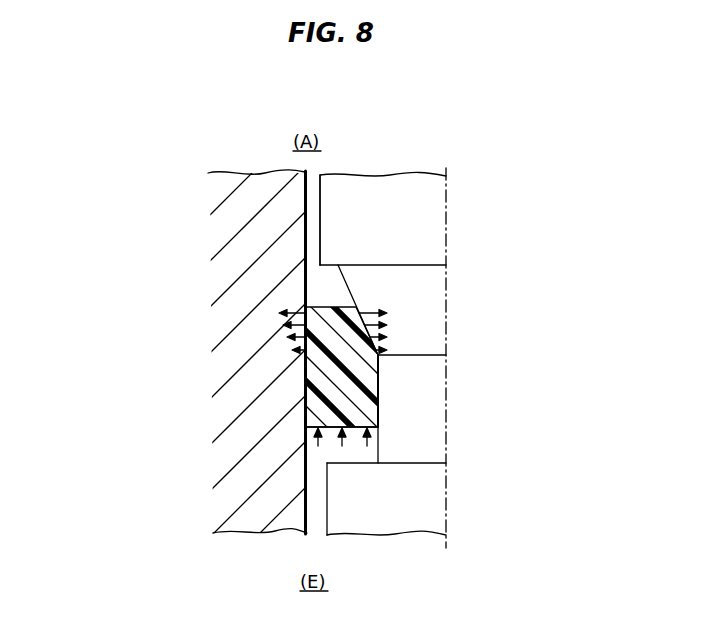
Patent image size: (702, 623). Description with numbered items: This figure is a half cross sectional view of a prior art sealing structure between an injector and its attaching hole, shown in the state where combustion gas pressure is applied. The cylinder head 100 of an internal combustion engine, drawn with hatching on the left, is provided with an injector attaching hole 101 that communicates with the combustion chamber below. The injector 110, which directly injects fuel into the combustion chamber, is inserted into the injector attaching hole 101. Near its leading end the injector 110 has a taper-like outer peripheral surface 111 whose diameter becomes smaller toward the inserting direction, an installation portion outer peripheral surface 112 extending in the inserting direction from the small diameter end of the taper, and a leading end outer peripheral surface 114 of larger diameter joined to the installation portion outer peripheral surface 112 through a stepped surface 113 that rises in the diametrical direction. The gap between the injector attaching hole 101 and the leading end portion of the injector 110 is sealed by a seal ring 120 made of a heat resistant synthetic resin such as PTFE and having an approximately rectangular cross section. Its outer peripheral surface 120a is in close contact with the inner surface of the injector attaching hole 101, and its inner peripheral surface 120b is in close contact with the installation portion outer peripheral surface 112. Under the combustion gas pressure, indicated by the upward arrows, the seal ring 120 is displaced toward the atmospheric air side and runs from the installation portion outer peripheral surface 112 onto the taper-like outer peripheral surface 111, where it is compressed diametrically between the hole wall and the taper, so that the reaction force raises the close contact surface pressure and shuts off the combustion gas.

The cylinder head 100 is at (257, 198).
The injector attaching hole 101 is at (308, 228).
The injector 110 is at (410, 211).
The taper-like outer peripheral surface 111 is at (345, 293).
The installation portion outer peripheral surface 112 is at (355, 407).
The stepped surface 113 is at (424, 463).
The leading end outer peripheral surface 114 is at (325, 491).
The seal ring 120 is at (328, 380).
The outer peripheral surface of the seal ring 120a is at (305, 364).
The inner peripheral surface of the seal ring 120b is at (378, 386).